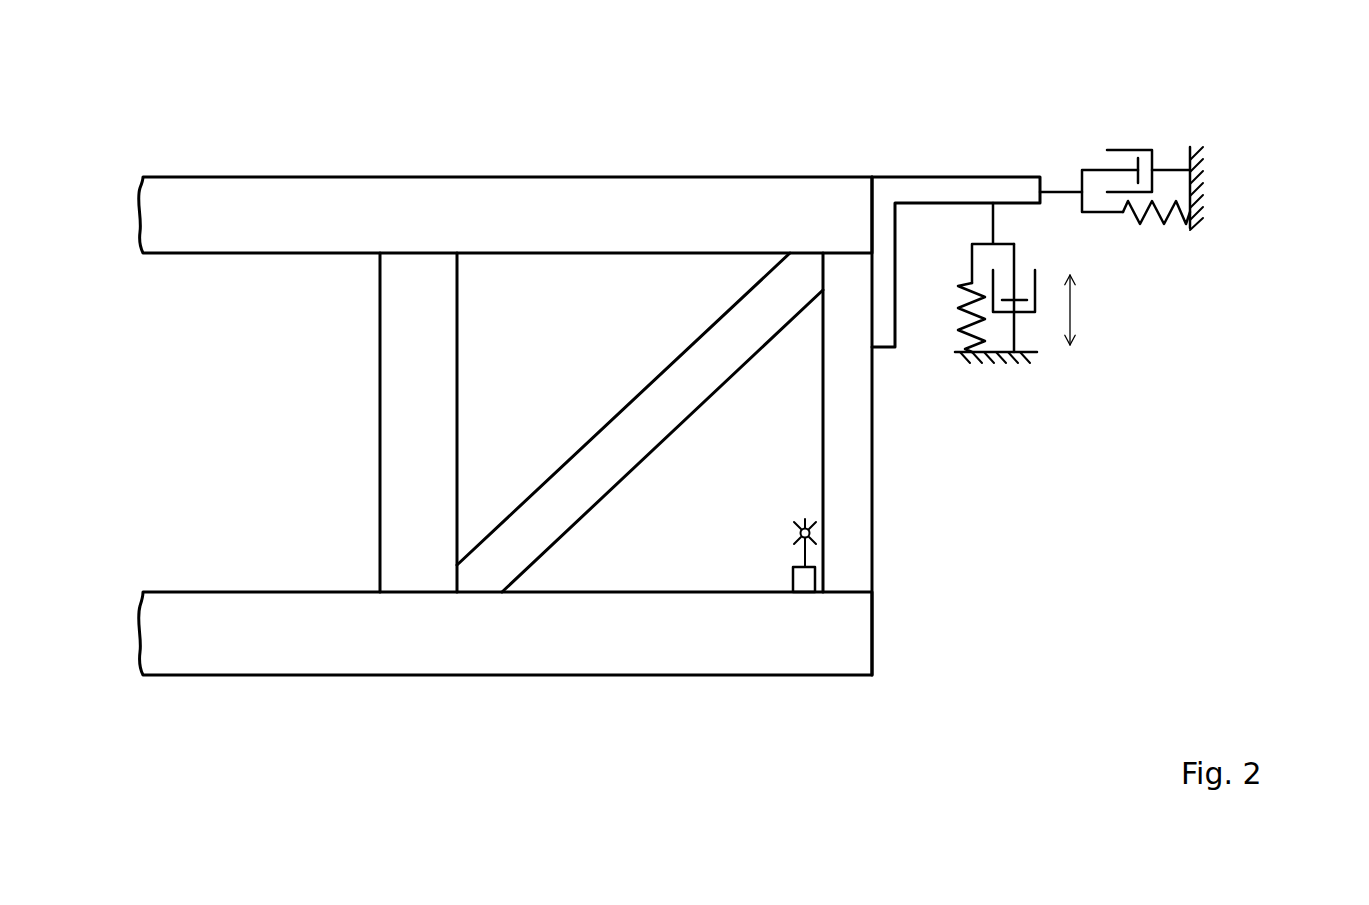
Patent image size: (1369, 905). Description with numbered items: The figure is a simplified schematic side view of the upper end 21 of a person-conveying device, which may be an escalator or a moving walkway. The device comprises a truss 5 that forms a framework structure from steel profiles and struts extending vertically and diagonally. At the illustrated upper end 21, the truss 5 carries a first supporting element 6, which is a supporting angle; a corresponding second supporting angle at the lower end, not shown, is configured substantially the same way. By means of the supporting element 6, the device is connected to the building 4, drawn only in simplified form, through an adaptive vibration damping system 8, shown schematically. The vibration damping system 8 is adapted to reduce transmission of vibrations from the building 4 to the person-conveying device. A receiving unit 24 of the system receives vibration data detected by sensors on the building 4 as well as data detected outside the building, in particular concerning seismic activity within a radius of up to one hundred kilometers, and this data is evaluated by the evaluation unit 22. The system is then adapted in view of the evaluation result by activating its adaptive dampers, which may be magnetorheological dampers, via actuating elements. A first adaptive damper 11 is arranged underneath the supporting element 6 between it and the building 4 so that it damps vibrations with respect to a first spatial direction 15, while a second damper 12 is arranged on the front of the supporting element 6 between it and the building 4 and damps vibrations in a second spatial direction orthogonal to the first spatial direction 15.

The building 4 is at (953, 357).
The truss 5 is at (568, 177).
The first supporting element 6 is at (930, 177).
The adaptive vibration damping system 8 is at (1222, 382).
The first adaptive damper 11 is at (940, 323).
The second damper 12 is at (1160, 130).
The first spatial direction 15 is at (1074, 316).
The upper end 21 is at (477, 715).
The evaluation unit 22 is at (793, 582).
The receiving unit 24 is at (797, 556).